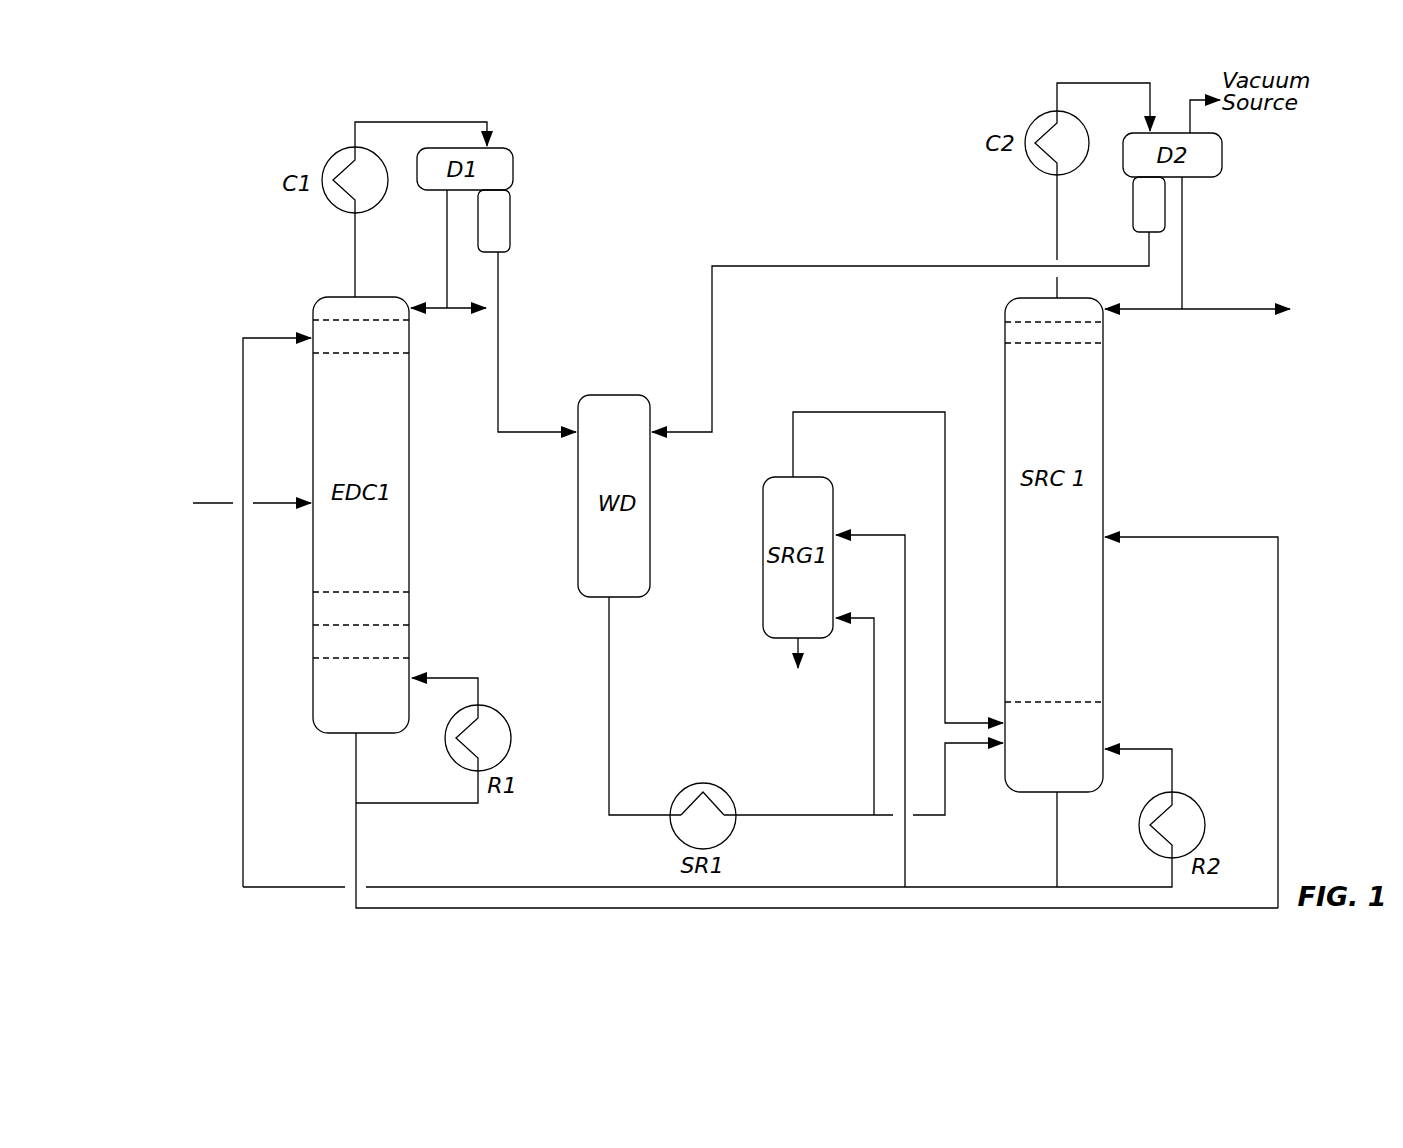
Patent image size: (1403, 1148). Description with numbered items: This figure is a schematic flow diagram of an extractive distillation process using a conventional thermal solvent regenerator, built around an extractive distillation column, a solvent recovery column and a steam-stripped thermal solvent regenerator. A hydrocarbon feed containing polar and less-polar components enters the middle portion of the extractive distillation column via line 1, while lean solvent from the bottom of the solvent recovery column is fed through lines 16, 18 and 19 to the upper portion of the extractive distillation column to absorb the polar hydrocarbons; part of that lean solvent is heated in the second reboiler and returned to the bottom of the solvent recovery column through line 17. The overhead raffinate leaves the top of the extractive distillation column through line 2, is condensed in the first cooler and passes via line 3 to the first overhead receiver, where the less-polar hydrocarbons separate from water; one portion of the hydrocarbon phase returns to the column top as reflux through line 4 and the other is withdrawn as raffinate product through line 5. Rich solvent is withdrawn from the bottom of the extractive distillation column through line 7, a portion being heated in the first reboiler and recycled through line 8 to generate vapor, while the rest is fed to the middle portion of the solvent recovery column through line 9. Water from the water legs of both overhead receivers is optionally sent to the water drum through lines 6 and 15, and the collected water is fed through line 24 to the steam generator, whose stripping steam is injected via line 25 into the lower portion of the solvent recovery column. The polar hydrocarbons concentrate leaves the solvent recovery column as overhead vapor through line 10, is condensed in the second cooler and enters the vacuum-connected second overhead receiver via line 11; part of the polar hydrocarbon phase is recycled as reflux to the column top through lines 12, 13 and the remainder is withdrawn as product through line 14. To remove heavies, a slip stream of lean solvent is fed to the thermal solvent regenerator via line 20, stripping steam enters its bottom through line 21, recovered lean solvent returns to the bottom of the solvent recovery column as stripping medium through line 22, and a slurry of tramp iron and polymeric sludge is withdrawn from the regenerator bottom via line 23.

The line 1 is at (252, 490).
The line 2 is at (369, 255).
The line 3 is at (421, 120).
The line 4 is at (429, 268).
The line 5 is at (466, 327).
The line 6 is at (537, 342).
The line 7 is at (806, 820).
The line 8 is at (445, 677).
The line 9 is at (1191, 708).
The line 10 is at (1041, 236).
The line 11 is at (1103, 107).
The line 12 is at (1200, 243).
The line 13 is at (1143, 295).
The line 14 is at (1236, 295).
The line 15 is at (900, 332).
The line 16 is at (1072, 839).
The line 17 is at (1153, 770).
The line 18 is at (707, 872).
The line 19 is at (277, 600).
The line 20 is at (884, 711).
The line 21 is at (855, 716).
The line 22 is at (898, 554).
The line 23 is at (805, 667).
The line 24 is at (629, 706).
The line 25 is at (863, 779).